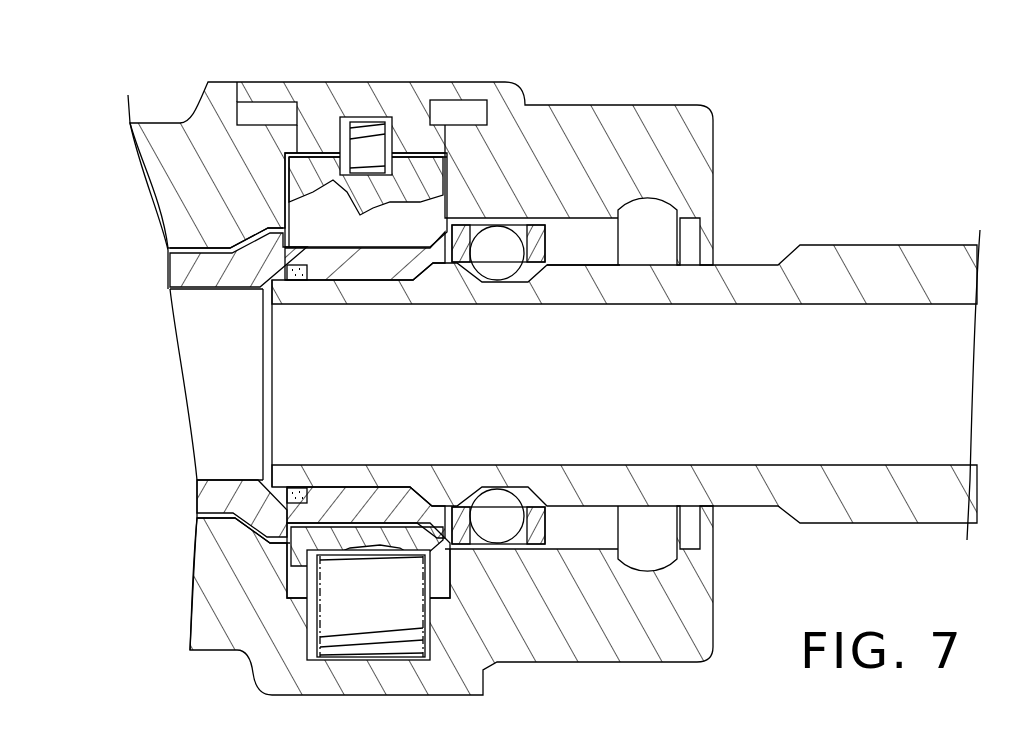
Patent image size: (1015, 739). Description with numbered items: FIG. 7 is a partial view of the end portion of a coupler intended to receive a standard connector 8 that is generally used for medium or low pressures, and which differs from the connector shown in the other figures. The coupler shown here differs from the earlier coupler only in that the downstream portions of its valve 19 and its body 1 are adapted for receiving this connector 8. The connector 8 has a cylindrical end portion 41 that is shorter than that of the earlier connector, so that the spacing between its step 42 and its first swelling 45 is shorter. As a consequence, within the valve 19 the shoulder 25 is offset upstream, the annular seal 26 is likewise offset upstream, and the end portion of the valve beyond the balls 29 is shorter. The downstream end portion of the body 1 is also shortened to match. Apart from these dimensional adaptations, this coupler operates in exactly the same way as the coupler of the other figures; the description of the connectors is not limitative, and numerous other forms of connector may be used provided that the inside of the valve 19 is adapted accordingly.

The body 1 is at (197, 135).
The connector 8 is at (928, 263).
The valve 19 is at (220, 500).
The shoulder 25 is at (265, 398).
The annular seal 26 is at (302, 283).
The balls 29 is at (500, 505).
The cylindrical end portion 41 is at (385, 292).
The step 42 is at (470, 286).
The first swelling 45 is at (573, 280).